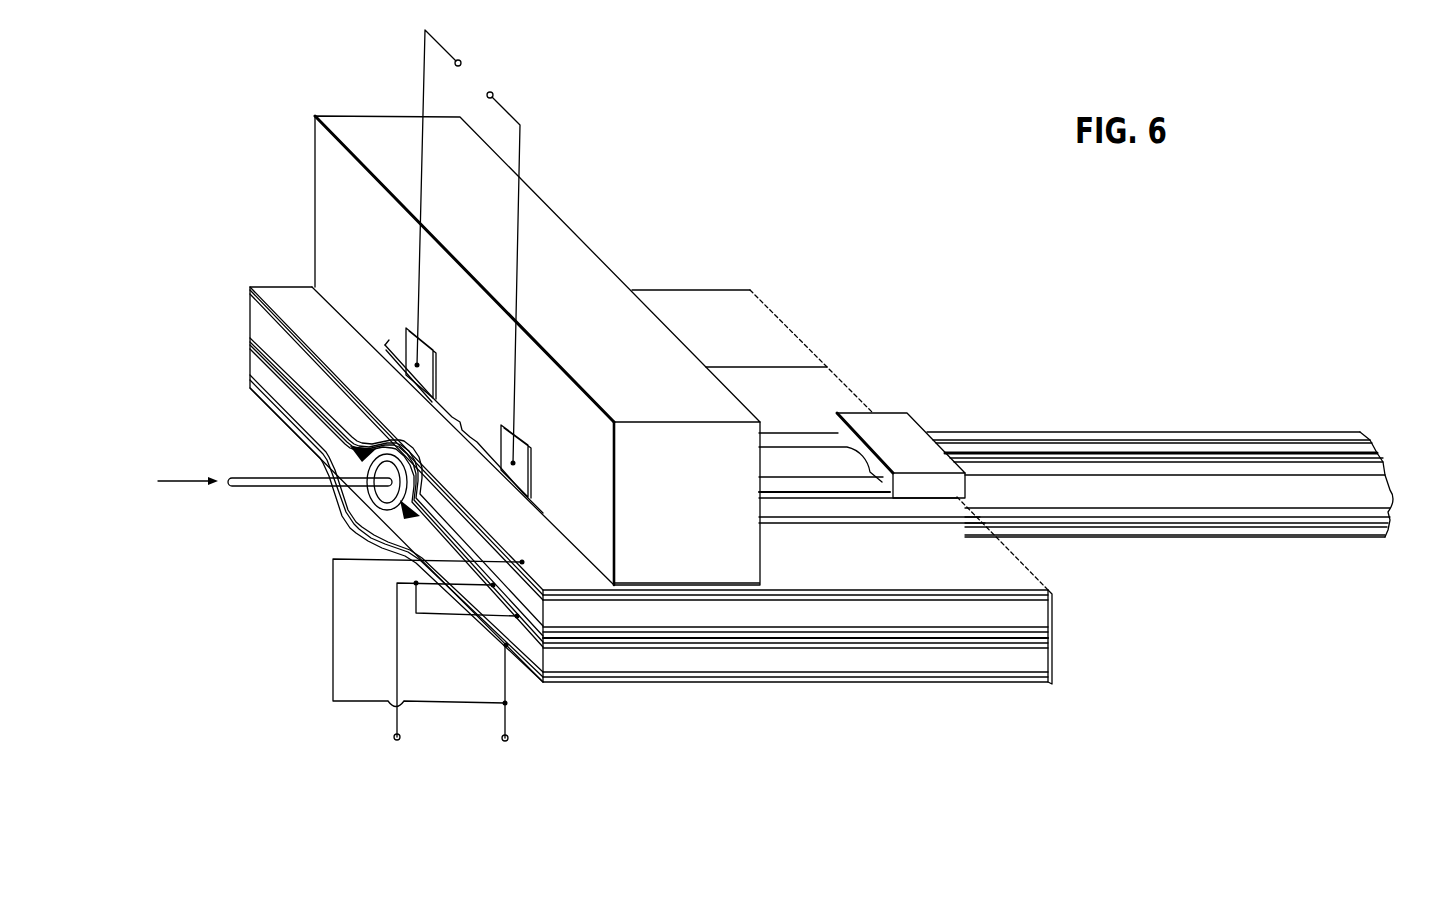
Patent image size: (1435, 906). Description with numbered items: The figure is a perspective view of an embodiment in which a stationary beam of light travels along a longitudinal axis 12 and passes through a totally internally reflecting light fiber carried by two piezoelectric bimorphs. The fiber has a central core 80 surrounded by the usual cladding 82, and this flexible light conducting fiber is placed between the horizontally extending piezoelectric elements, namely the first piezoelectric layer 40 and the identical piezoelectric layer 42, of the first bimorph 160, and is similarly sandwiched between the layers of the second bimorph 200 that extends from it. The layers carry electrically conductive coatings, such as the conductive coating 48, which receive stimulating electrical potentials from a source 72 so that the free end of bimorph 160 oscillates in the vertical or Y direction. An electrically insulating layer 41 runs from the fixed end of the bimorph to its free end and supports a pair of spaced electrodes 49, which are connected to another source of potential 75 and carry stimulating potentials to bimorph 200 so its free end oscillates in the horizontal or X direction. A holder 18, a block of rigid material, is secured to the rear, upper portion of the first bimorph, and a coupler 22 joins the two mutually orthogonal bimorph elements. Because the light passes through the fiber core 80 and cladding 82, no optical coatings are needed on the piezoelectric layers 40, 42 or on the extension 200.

The longitudinal axis 12 is at (191, 488).
The holder 18 is at (604, 341).
The coupler 22 is at (895, 425).
The first piezoelectric layer 40 is at (869, 617).
The electrically insulating layer 41 is at (395, 370).
The piezoelectric layer 42 is at (935, 665).
The electrically conductive coating 48 is at (352, 357).
The electrodes 49 is at (420, 377).
The source of stimulating electrical potentials 72 is at (436, 756).
The source of potential 75 is at (543, 52).
The central core 80 is at (387, 493).
The cladding 82 is at (355, 452).
The bimorph 160 is at (718, 281).
The bimorph 200 is at (1193, 430).